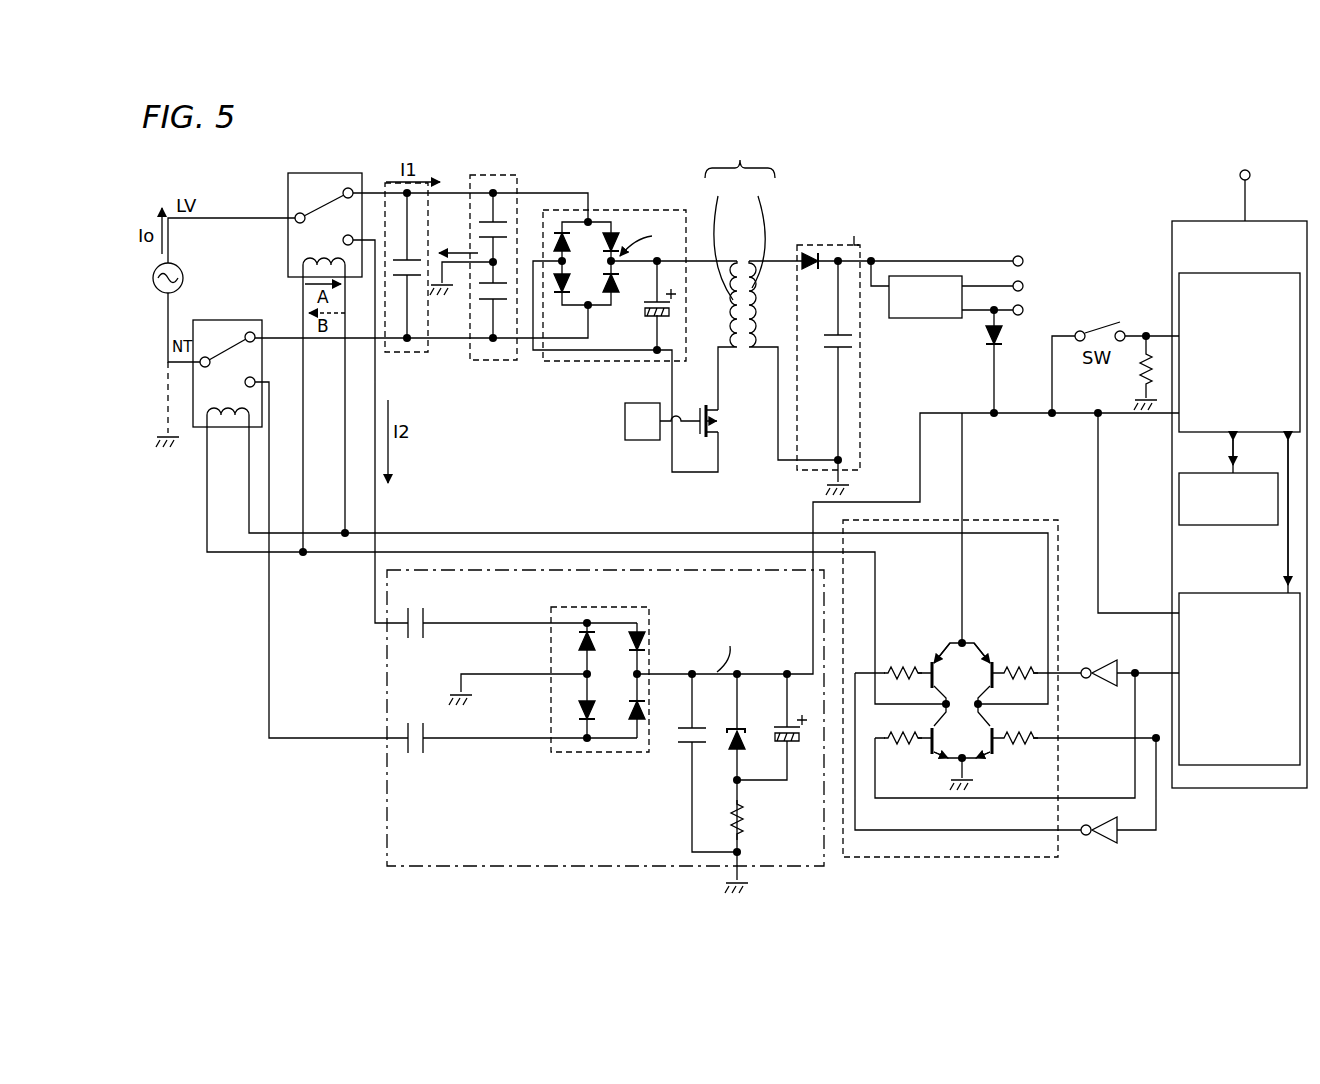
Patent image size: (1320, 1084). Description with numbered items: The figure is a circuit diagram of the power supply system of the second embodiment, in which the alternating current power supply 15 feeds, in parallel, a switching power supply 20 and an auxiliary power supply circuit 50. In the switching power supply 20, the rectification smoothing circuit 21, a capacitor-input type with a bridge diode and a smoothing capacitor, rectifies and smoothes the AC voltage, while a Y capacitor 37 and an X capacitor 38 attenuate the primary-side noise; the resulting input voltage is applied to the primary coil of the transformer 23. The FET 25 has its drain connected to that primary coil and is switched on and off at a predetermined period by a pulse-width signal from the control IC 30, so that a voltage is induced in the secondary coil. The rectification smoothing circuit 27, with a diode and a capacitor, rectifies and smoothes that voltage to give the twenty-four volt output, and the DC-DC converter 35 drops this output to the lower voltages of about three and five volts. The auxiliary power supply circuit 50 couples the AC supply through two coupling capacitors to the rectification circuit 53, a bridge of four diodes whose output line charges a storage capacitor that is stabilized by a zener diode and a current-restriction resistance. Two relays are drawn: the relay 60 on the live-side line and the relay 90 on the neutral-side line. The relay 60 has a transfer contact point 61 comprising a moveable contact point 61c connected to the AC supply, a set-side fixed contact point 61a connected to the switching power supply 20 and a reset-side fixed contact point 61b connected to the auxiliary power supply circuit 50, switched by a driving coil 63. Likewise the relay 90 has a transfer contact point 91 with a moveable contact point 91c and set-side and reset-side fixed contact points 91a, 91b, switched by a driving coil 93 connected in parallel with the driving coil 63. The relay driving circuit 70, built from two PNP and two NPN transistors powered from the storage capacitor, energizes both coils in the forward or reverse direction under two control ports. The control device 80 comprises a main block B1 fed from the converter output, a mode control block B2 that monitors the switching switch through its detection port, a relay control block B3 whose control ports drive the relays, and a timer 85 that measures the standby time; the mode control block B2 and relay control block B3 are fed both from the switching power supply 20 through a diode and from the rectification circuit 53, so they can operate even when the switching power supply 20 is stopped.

The alternating current power supply 15 is at (160, 292).
The switching power supply 20 is at (753, 321).
The rectification smoothing circuit 21 is at (632, 210).
The transformer 23 is at (740, 166).
The FET 25 is at (732, 452).
The rectification smoothing circuit 27 is at (828, 244).
The control IC 30 is at (640, 440).
The DC-DC converter 35 is at (922, 276).
The Y capacitor 37 is at (493, 176).
The X capacitor 38 is at (408, 352).
The auxiliary power supply circuit 50 is at (605, 745).
The rectification circuit 53 is at (649, 610).
The relay 60 is at (317, 203).
The transfer contact point 61 is at (317, 203).
The fixed contact point of a set-side 61a is at (344, 189).
The fixed contact point of a reset-side 61b is at (320, 236).
The moveable contact point 61c is at (297, 213).
The driving coil 63 is at (312, 265).
The relay driving circuit 70 is at (1048, 518).
The control device 80 is at (1222, 513).
The timer 85 is at (1200, 512).
The relay 90 is at (245, 367).
The transfer contact point 91 is at (246, 334).
The fixed contact point of a set-side 91a is at (256, 333).
The fixed contact point of a reset-side 91b is at (256, 380).
The moveable contact point 91c is at (204, 357).
The driving coil 93 is at (225, 422).
The main block B1 is at (1286, 243).
The mode control block B2 is at (1178, 290).
The relay control block B3 is at (1280, 752).